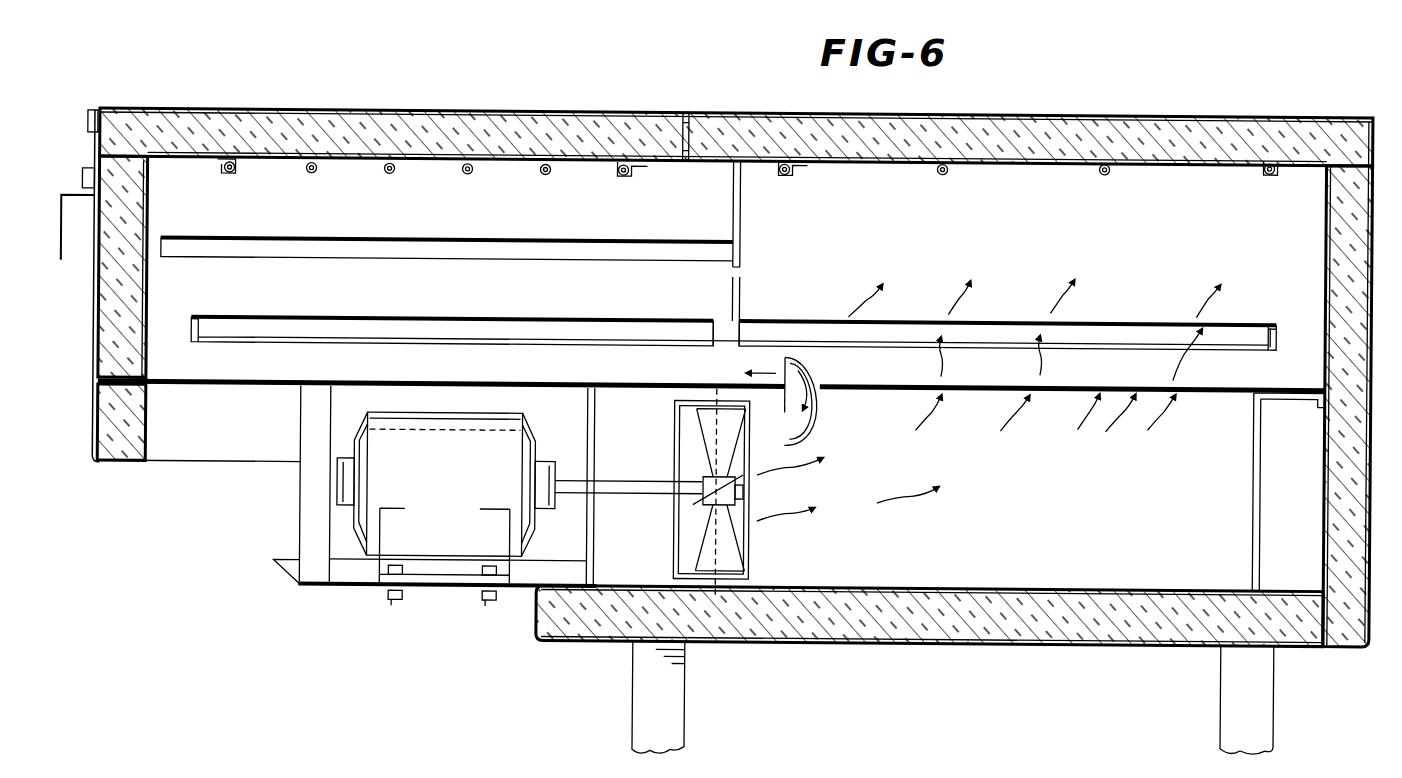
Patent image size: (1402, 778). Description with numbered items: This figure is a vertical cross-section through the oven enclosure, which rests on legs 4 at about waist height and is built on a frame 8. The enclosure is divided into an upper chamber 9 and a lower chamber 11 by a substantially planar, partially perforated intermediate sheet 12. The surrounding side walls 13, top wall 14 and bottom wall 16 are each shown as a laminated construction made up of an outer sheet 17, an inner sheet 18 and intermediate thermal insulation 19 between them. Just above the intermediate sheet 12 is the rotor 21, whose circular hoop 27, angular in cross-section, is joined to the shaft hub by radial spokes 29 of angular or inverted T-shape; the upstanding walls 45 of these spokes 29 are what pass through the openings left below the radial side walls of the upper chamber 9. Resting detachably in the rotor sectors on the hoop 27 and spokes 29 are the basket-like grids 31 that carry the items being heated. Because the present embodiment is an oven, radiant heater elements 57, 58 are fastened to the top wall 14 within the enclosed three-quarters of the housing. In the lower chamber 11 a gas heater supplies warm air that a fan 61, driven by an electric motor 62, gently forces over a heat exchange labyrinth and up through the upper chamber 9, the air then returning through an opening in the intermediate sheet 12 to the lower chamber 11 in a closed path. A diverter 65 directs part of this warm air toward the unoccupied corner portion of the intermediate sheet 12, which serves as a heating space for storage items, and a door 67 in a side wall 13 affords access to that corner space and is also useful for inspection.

The legs 4 is at (640, 699).
The frame 8 is at (880, 645).
The upper chamber 9 is at (1052, 244).
The lower chamber 11 is at (1110, 490).
The intermediate sheet 12 is at (268, 388).
The side walls 13 is at (1377, 142).
The top wall 14 is at (1042, 107).
The bottom wall 16 is at (437, 590).
The outer sheet 17 is at (462, 107).
The inner sheet 18 is at (447, 160).
The thermal insulation 19 is at (516, 107).
The rotor 21 is at (1298, 316).
The circular hoop 27 is at (200, 345).
The radial spokes 29 is at (718, 343).
The basket-like grids 31 is at (457, 314).
The upstanding walls 45 is at (744, 286).
The radiant heater element 57 is at (1098, 165).
The radiant heater element 58 is at (389, 173).
The fan 61 is at (702, 430).
The electric motor 62 is at (522, 439).
The diverter 65 is at (822, 370).
The door 67 is at (158, 236).